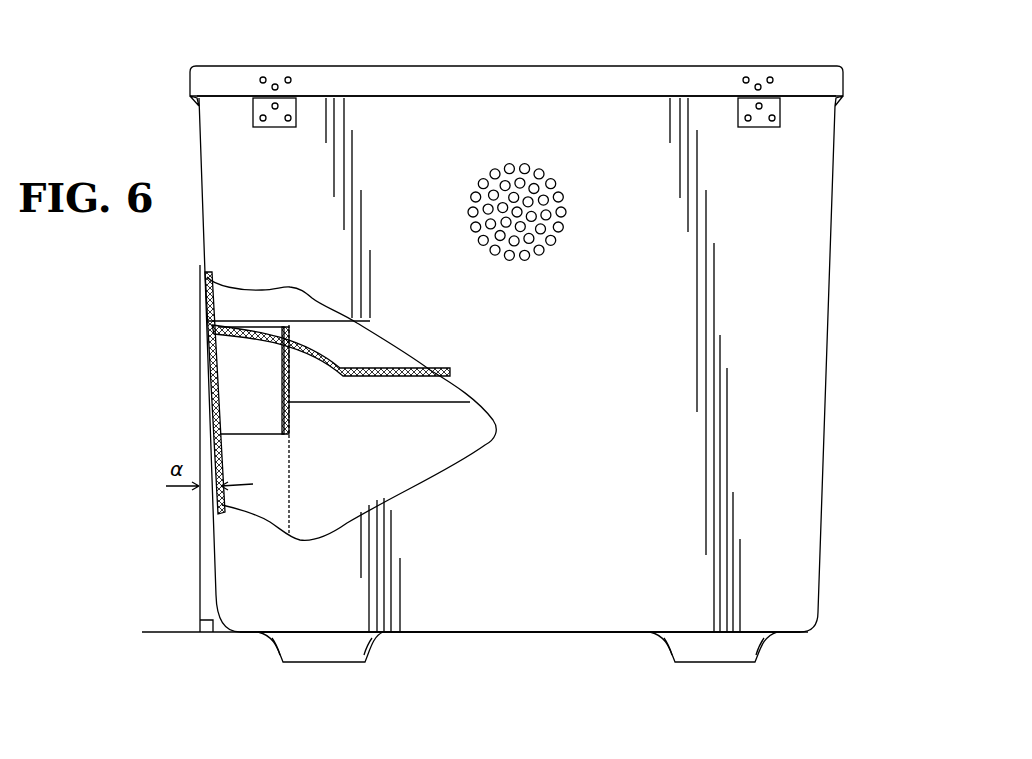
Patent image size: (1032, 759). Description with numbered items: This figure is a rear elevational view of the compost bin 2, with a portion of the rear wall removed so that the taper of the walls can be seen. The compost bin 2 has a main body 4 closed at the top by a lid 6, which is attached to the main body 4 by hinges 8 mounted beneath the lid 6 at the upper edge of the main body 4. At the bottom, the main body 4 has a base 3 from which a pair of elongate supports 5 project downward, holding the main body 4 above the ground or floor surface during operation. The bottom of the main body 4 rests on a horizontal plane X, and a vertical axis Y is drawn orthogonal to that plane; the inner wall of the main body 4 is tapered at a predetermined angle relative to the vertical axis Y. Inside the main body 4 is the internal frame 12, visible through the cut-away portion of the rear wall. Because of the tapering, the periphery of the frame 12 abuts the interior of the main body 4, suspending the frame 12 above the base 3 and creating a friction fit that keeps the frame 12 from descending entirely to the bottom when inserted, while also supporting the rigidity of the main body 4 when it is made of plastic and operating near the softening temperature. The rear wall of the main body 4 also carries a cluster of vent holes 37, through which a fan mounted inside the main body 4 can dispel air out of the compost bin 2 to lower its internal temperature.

The compost bin 2 is at (860, 130).
The base 3 is at (520, 633).
The main body 4 is at (800, 273).
The elongate supports 5 is at (333, 663).
The lid 6 is at (226, 66).
The hinge 8 is at (258, 127).
The internal frame 12 is at (387, 353).
The vent holes 37 is at (516, 228).
The horizontal plane X is at (175, 632).
The vertical axis Y is at (200, 405).